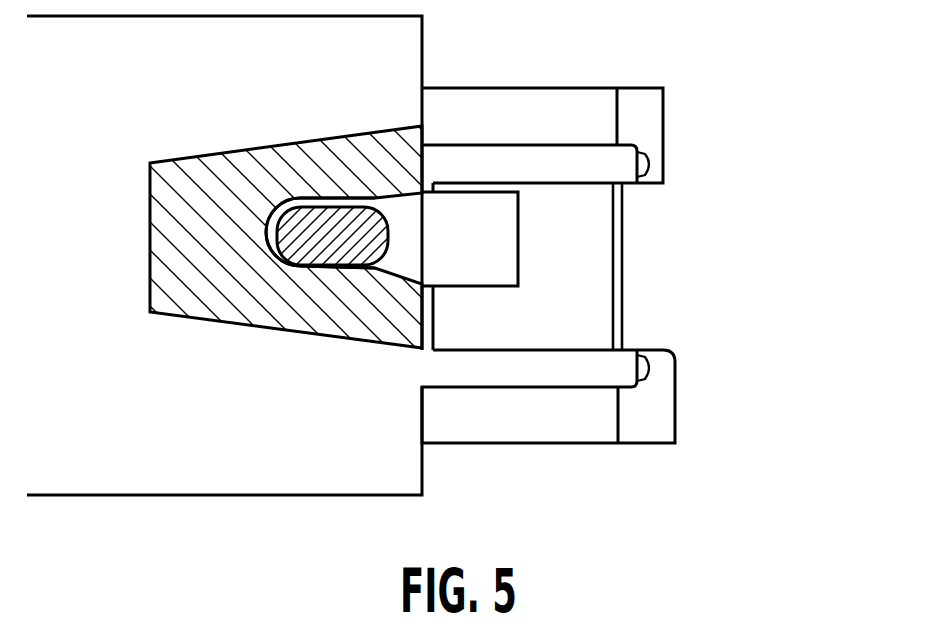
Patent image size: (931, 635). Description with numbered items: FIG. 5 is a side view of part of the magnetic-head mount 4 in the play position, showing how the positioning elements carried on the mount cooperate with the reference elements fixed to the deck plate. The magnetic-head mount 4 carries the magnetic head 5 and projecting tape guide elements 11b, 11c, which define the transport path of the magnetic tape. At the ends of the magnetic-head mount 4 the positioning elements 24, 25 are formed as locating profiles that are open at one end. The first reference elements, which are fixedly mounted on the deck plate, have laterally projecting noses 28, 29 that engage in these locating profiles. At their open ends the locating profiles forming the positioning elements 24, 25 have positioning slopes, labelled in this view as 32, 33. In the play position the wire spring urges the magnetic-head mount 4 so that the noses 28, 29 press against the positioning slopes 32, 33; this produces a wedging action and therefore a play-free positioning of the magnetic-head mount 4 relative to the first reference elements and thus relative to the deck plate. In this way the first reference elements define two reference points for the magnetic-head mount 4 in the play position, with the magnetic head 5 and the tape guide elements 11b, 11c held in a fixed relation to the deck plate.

The magnetic-head mount 4 is at (213, 495).
The magnetic head 5 is at (625, 263).
The tape guide element 11b is at (612, 265).
The tape guide element 11c is at (652, 165).
The positioning element 24 is at (285, 317).
The positioning element 25 is at (250, 323).
The nose 28 is at (394, 235).
The nose 29 is at (389, 236).
The positioning slope 32 is at (264, 171).
The slot 33 is at (243, 192).